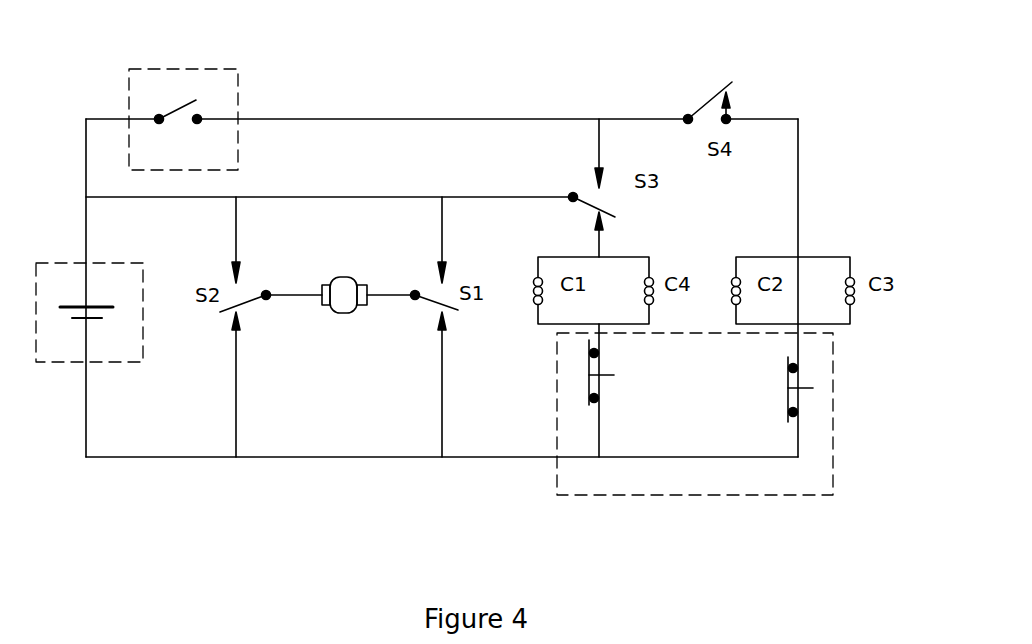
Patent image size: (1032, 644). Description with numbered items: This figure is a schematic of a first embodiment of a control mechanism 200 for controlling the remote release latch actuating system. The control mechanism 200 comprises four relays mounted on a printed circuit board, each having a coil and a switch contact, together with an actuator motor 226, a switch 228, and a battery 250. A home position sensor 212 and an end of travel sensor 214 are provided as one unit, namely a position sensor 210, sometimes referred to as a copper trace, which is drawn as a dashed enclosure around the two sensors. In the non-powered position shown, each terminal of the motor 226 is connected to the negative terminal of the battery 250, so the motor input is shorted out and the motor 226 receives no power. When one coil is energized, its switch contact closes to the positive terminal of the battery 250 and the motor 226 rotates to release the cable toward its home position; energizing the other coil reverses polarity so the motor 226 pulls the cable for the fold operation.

The control mechanism 200 is at (525, 43).
The switch 228 is at (208, 68).
The battery 250 is at (67, 262).
The actuator motor 226 is at (338, 305).
The position sensor 210 is at (678, 495).
The home position sensor 212 is at (585, 375).
The end of travel sensor 214 is at (812, 378).